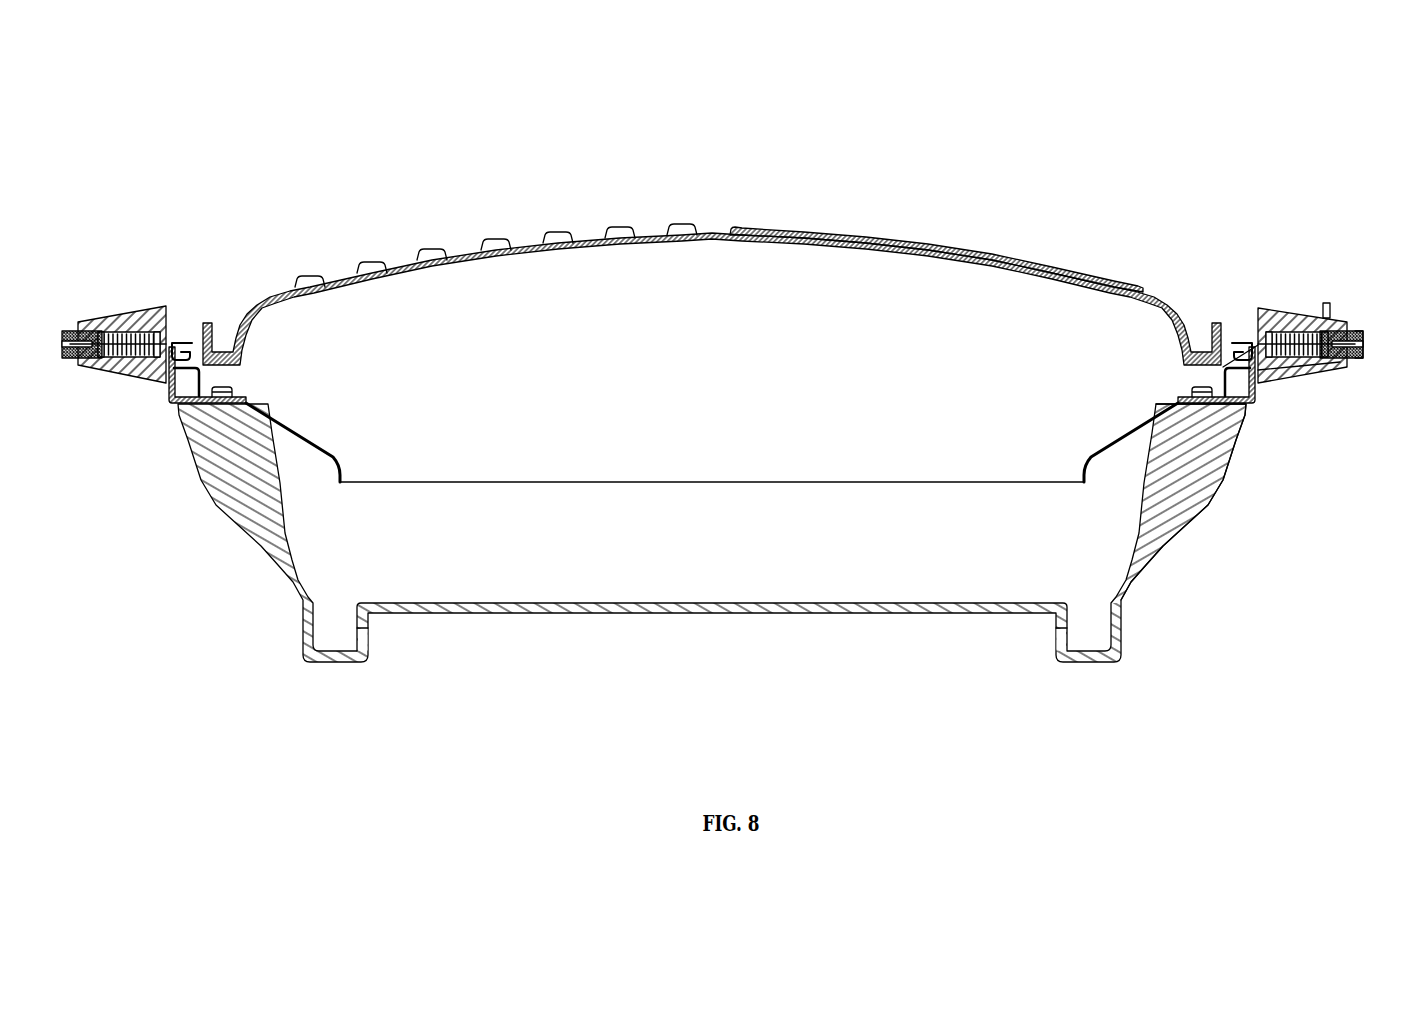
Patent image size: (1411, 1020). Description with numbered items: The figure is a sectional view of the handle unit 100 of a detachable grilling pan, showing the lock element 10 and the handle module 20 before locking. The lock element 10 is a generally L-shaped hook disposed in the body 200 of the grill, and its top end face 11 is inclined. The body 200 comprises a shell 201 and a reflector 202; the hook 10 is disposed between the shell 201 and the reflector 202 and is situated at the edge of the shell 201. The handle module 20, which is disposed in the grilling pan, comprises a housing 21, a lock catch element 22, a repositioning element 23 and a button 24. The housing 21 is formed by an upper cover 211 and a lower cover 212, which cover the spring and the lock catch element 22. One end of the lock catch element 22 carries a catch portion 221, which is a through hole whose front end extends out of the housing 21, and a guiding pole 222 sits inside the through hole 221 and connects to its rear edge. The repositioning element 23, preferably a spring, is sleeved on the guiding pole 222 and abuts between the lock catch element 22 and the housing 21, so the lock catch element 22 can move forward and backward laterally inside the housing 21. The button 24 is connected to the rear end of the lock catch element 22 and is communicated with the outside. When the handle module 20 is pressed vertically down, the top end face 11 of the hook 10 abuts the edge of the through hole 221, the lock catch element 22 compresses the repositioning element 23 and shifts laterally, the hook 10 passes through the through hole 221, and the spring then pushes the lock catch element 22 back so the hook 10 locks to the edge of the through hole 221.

The lock element 10 is at (1213, 323).
The top end face 11 is at (1254, 342).
The handle module 20 is at (1290, 317).
The housing 21 is at (1262, 318).
The upper cover 211 is at (1345, 320).
The lower cover 212 is at (1338, 368).
The lock catch element 22 is at (1343, 335).
The catch portion 221 is at (1258, 338).
The guiding pole 222 is at (1311, 368).
The repositioning element 23 is at (1289, 368).
The button 24 is at (1360, 360).
The handle unit 100 is at (1330, 303).
The body 200 is at (1133, 582).
The shell 201 is at (1220, 455).
The reflector 202 is at (1256, 385).